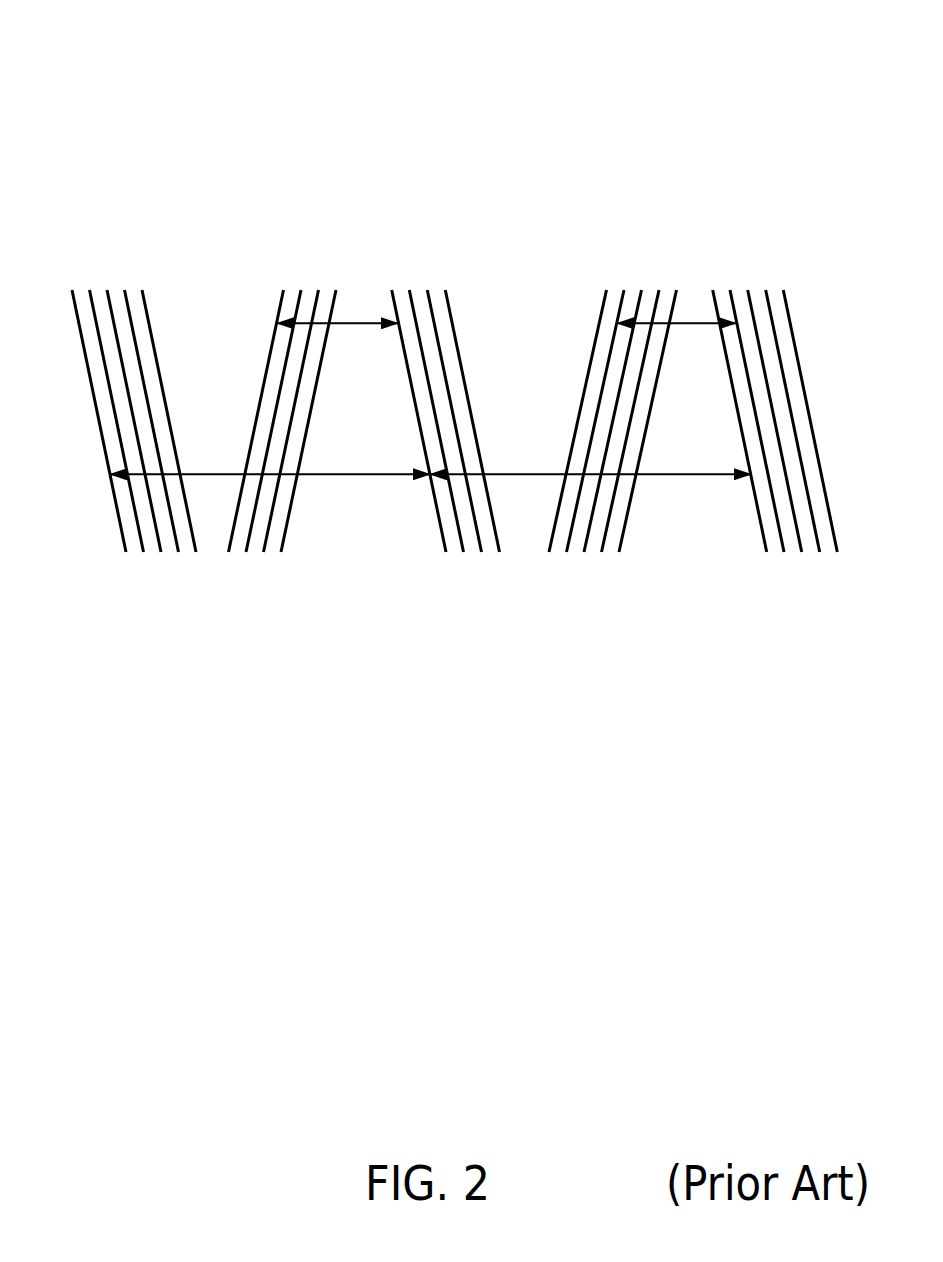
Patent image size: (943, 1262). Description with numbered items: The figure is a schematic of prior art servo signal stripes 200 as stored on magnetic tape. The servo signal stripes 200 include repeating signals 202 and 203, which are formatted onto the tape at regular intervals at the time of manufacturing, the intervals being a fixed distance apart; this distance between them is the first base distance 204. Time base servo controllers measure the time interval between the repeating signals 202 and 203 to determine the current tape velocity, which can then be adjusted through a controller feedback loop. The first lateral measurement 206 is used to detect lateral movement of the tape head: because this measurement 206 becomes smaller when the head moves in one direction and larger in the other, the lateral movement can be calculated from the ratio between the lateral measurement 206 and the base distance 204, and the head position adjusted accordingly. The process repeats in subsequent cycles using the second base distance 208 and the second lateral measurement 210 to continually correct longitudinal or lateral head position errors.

The servo signal stripes 200 is at (250, 93).
The signal 202 is at (100, 431).
The signal 203 is at (440, 530).
The B1 204 is at (350, 477).
The A1 206 is at (352, 330).
The B2 208 is at (703, 478).
The A2 210 is at (695, 330).